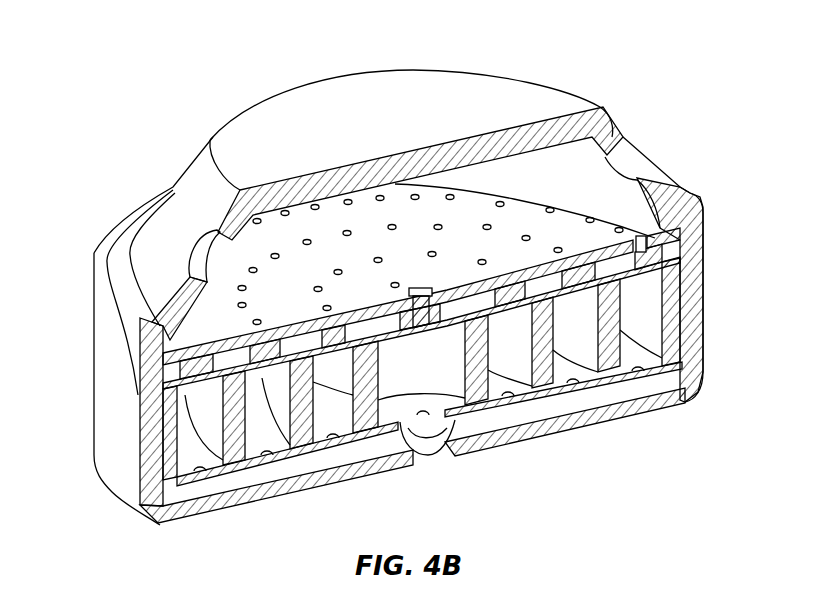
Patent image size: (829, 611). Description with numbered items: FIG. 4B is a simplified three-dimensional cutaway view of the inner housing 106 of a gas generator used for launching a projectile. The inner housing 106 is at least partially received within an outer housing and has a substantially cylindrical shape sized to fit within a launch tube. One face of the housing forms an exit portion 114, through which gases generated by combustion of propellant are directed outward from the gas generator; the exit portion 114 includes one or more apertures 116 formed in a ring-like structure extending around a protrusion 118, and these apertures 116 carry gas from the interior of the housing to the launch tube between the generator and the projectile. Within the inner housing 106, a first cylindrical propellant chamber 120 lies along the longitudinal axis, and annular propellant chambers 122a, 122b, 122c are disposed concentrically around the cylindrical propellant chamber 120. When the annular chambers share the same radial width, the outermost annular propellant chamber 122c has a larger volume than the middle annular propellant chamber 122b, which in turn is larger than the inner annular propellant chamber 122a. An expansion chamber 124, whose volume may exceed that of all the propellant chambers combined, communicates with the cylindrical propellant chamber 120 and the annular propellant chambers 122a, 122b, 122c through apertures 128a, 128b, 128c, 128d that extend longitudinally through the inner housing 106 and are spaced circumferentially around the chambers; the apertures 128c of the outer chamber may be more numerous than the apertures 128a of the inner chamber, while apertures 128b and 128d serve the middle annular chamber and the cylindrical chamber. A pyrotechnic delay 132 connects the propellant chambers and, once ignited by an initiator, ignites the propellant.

The inner housing 106 is at (703, 294).
The exit portion 114 is at (162, 153).
The apertures 116 is at (626, 162).
The protrusion 118 is at (345, 110).
The cylindrical propellant chamber 120 is at (433, 402).
The inner annular propellant chamber 122a is at (322, 418).
The middle annular propellant chamber 122b is at (255, 440).
The outermost annular propellant chamber 122c is at (188, 453).
The expansion chamber 124 is at (263, 288).
The apertures 128a is at (482, 258).
The apertures 128b is at (560, 247).
The apertures 128c is at (670, 216).
The apertures 128d is at (421, 286).
The pyrotechnic delay 132 is at (545, 405).